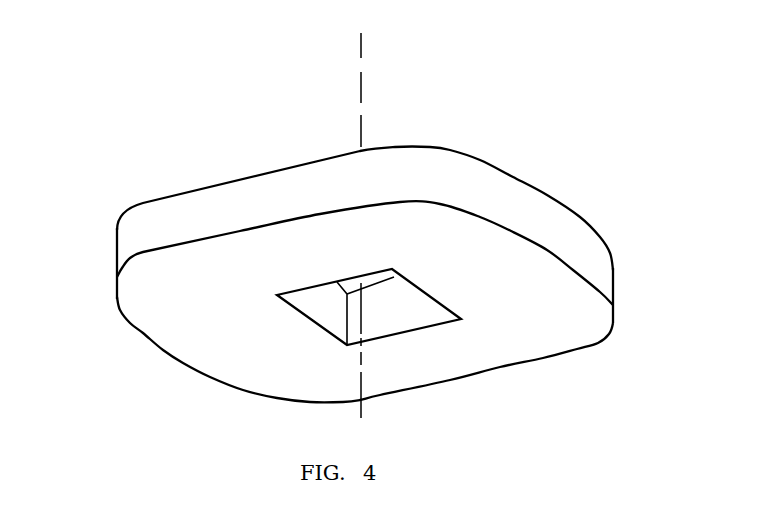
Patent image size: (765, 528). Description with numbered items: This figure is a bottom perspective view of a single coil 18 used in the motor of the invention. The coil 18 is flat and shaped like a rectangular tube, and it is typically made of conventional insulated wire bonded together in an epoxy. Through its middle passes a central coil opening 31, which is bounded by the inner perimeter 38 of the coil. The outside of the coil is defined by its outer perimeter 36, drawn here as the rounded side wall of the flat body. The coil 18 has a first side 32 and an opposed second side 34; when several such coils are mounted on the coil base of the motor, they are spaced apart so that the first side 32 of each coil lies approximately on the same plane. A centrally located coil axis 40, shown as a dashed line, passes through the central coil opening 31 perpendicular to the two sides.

The coil 18 is at (350, 236).
The central coil opening 31 is at (382, 278).
The first side 32 is at (451, 148).
The second side 34 is at (535, 317).
The outer perimeter 36 is at (133, 241).
The inner perimeter 38 is at (302, 354).
The coil axis 40 is at (362, 50).